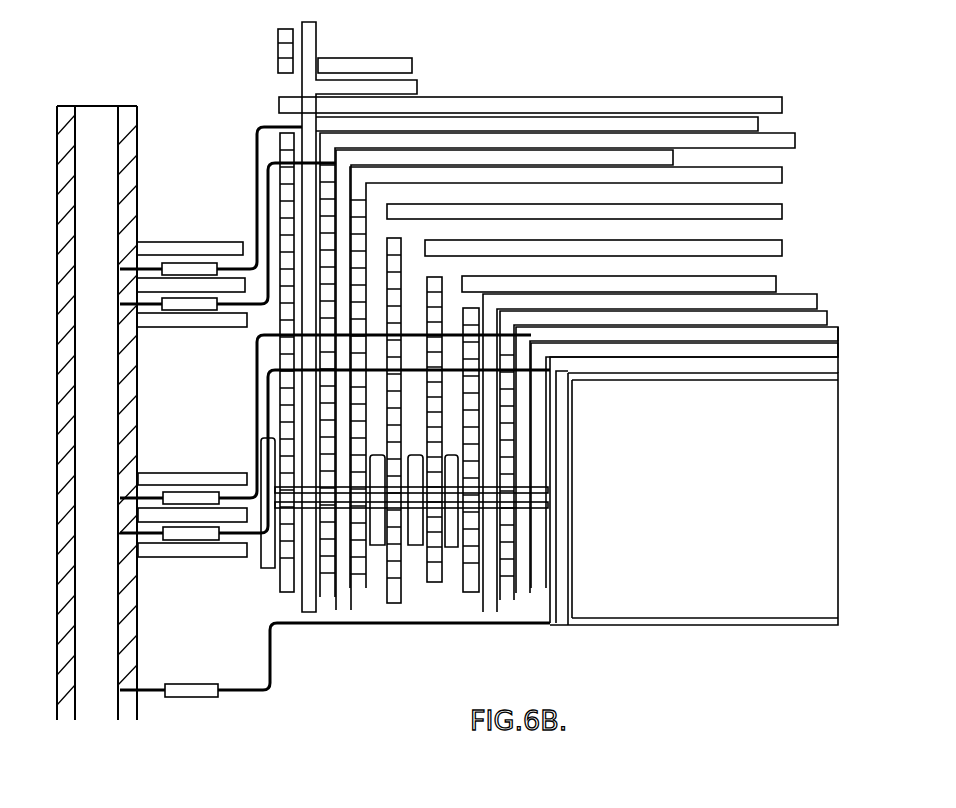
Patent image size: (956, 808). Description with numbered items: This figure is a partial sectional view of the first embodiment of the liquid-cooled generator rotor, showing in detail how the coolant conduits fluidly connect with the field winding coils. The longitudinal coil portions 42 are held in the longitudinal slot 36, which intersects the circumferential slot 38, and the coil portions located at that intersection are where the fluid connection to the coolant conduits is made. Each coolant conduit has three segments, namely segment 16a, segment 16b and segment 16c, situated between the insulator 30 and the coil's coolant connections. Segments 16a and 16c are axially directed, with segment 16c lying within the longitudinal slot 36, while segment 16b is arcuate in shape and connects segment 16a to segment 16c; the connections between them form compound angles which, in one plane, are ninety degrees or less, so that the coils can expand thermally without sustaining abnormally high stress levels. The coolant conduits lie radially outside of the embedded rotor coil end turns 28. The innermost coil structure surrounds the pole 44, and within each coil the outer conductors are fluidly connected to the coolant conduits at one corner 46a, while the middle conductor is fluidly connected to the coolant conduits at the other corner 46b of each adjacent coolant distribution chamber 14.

The coolant distribution chamber 14 is at (78, 200).
The coolant conduit segment 16a is at (235, 495).
The coolant conduit segment 16b is at (256, 372).
The coolant conduit segment 16c is at (263, 335).
The rotor coil end turns 28 is at (491, 608).
The insulator 30 is at (205, 698).
The longitudinal slot 36 is at (642, 160).
The circumferential slot 38 is at (510, 462).
The longitudinal coil portions 42 is at (722, 292).
The pole 44 is at (715, 496).
The corner 46a is at (563, 372).
The corner 46b is at (565, 620).